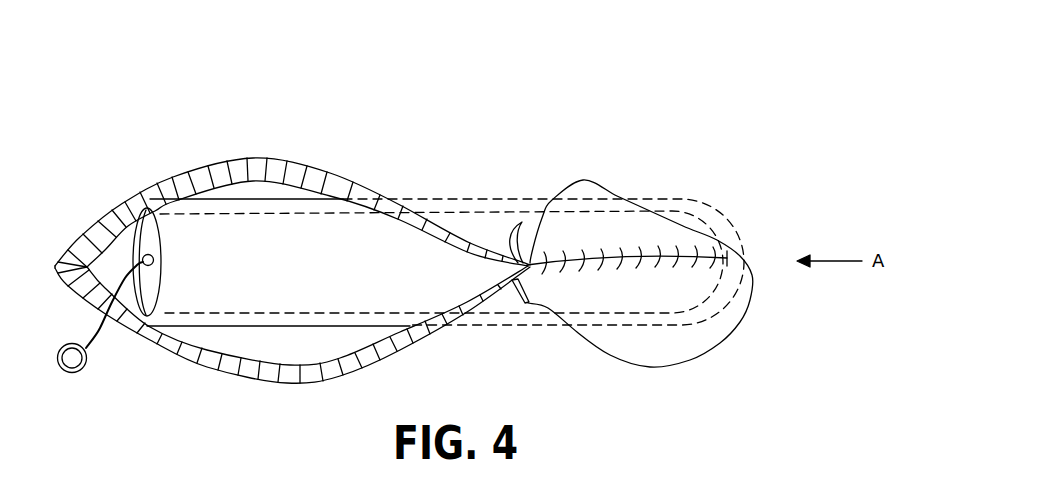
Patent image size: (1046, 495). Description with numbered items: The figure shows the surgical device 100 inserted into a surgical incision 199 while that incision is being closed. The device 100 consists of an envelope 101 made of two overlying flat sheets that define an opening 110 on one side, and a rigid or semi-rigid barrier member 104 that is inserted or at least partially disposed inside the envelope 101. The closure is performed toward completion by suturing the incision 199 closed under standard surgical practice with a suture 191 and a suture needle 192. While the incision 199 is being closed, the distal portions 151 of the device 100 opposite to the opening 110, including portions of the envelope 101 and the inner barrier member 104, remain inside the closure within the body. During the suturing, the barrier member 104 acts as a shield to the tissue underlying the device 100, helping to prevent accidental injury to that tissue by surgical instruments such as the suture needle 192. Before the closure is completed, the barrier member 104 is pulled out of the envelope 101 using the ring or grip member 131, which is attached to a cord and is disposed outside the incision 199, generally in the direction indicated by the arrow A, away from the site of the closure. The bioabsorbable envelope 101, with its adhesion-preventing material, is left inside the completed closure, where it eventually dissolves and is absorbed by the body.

The surgical device 100 is at (292, 239).
The envelope 101 is at (668, 198).
The barrier member 104 is at (463, 210).
The opening 110 is at (123, 218).
The ring or grip member 131 is at (83, 374).
The distal portions 151 is at (614, 150).
The suture 191 is at (687, 360).
The suture needle 192 is at (520, 223).
The incision 199 is at (255, 170).